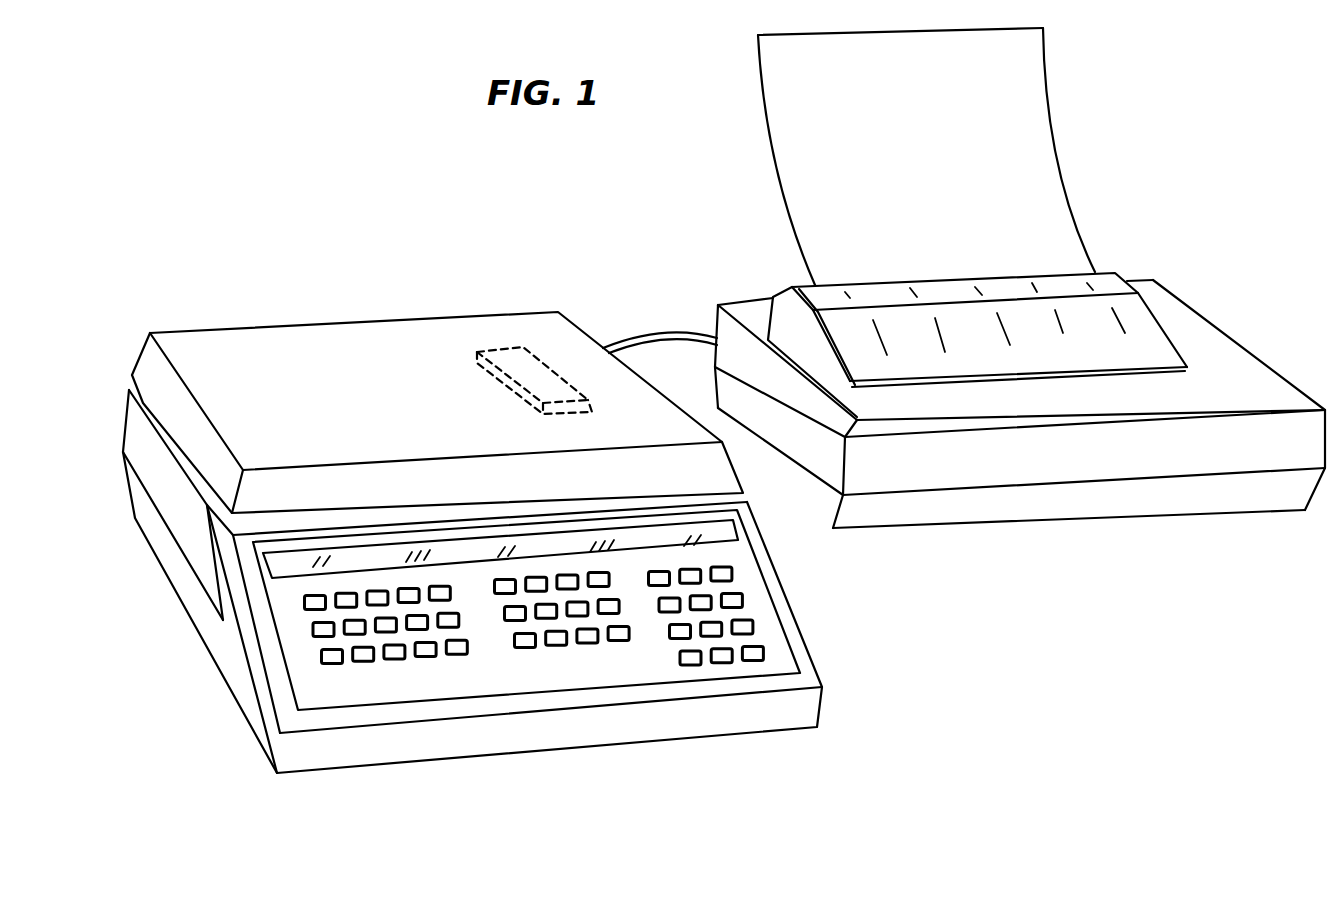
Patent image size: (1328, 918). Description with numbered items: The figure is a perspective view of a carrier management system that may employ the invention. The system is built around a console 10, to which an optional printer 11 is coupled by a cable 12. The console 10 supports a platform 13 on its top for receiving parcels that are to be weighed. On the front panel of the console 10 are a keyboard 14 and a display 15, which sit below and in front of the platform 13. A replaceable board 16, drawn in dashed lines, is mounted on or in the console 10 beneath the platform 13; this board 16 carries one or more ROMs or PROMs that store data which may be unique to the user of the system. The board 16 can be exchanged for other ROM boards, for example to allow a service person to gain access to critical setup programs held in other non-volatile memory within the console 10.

The console 10 is at (172, 512).
The printer 11 is at (990, 497).
The cable 12 is at (672, 333).
The platform 13 is at (290, 333).
The keyboard 14 is at (297, 650).
The display 15 is at (277, 565).
The replaceable board 16 is at (518, 347).